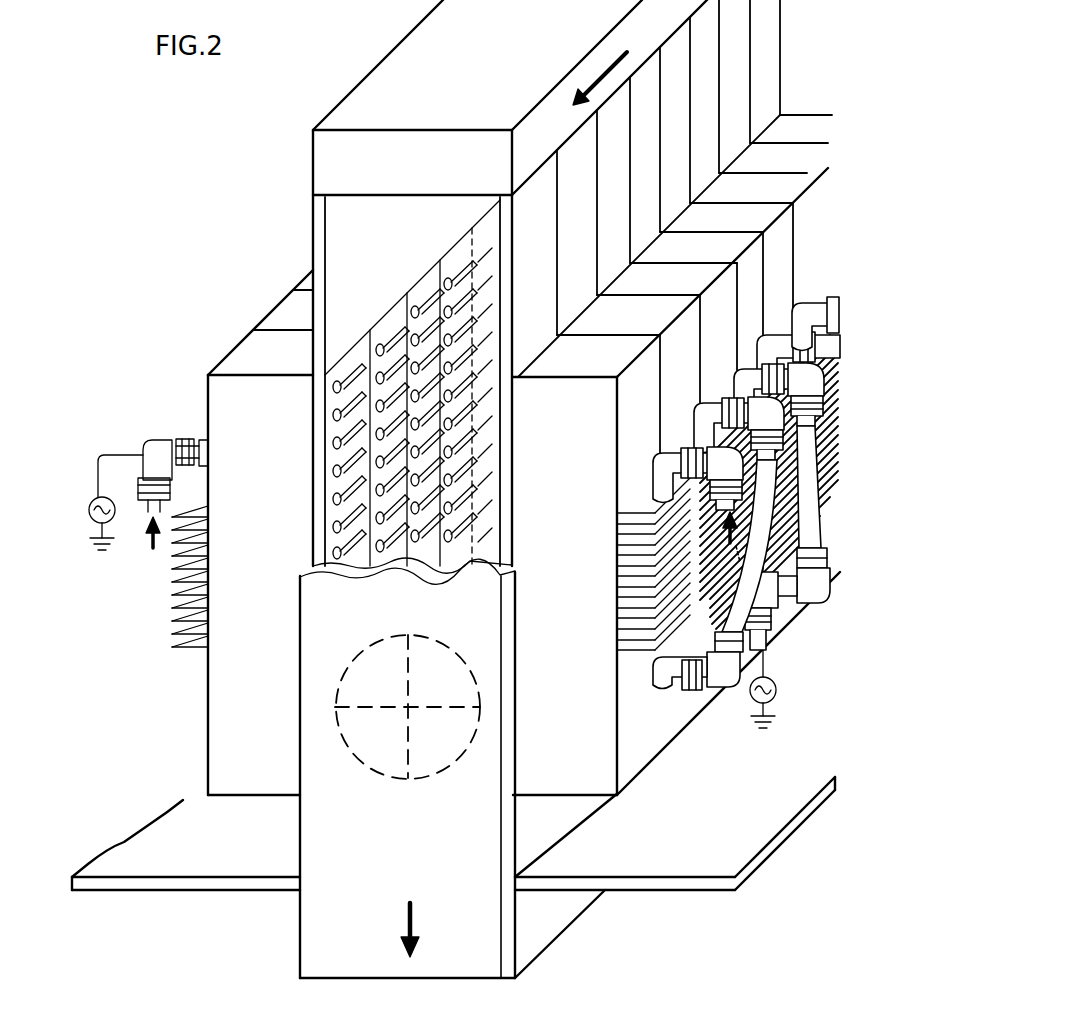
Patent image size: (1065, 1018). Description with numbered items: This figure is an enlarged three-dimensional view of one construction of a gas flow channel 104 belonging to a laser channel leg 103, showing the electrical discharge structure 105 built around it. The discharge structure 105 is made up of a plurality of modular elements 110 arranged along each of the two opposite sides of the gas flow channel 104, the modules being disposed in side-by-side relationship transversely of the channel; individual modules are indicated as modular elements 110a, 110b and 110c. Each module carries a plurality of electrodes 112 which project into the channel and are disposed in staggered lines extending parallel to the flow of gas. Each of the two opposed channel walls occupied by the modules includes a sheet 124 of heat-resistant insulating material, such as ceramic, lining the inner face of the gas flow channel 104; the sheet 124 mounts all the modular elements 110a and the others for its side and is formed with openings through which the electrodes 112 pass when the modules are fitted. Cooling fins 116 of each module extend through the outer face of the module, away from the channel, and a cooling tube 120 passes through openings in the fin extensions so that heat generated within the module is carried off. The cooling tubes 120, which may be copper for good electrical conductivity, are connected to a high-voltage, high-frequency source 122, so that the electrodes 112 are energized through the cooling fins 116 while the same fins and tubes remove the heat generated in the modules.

The laser channel leg 103 is at (371, 768).
The gas flow channel 104 is at (396, 222).
The electrical discharge structure 105 is at (273, 205).
The modular elements 110 is at (643, 755).
The modular element 110a is at (240, 366).
The modular element 110b is at (288, 320).
The modular element 110c is at (312, 283).
The electrodes 112 is at (332, 384).
The cooling fins 116 is at (204, 648).
The cooling tube 120 is at (207, 445).
The high-voltage, high-frequency source 122 is at (92, 500).
The sheet of heat-resistant insulating material 124 is at (313, 460).